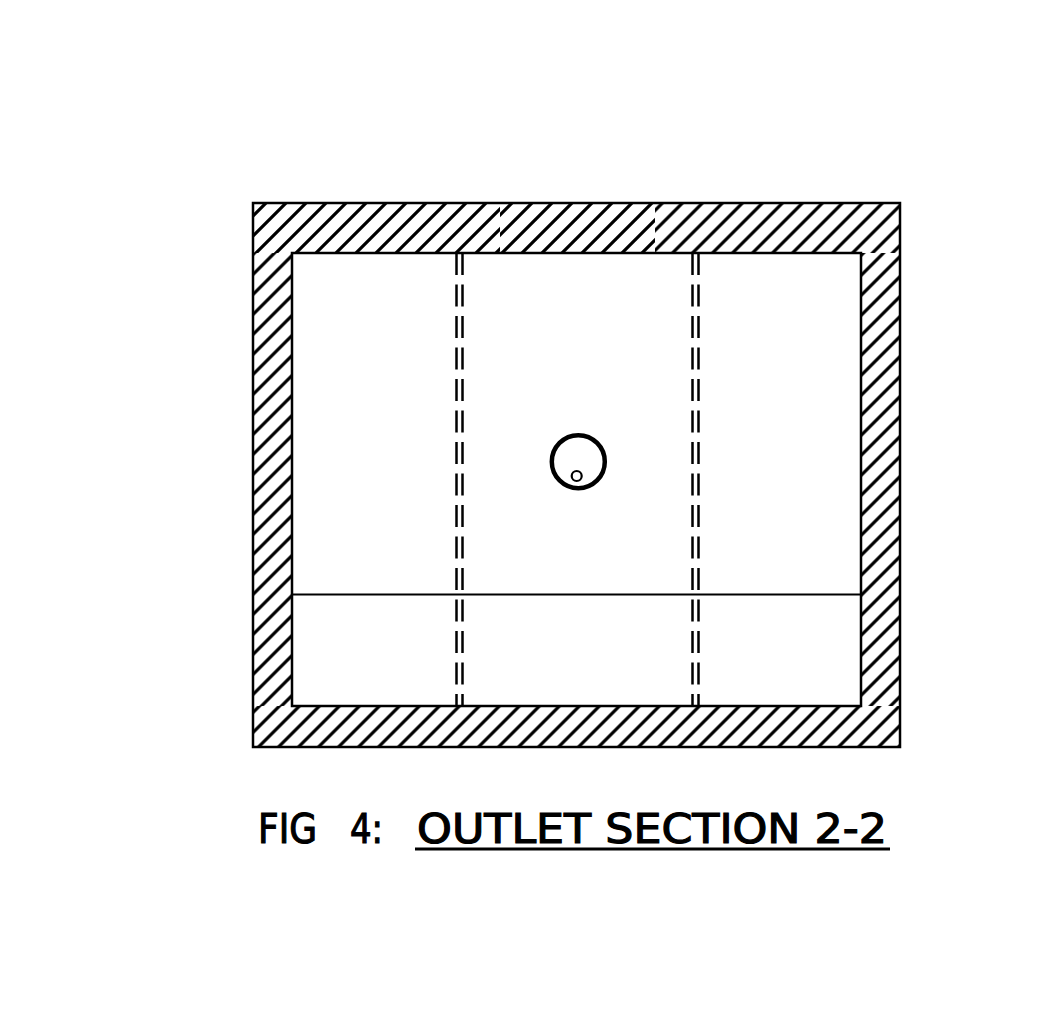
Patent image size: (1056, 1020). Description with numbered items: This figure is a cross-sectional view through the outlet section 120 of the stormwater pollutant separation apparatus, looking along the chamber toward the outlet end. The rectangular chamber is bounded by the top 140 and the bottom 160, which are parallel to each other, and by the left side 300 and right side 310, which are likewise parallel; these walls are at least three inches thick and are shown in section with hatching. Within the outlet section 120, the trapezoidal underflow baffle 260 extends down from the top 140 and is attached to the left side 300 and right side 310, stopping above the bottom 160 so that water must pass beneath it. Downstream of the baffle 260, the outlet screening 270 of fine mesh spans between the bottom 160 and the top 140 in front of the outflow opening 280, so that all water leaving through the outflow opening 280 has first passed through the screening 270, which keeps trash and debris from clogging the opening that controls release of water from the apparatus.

The outlet section 120 is at (915, 132).
The top 140 is at (693, 202).
The bottom 160 is at (751, 748).
The trapezoidal underflow baffle 260 is at (322, 330).
The outlet screening 270 is at (698, 653).
The outflow opening 280 is at (595, 437).
The left side 300 is at (253, 513).
The right side 310 is at (900, 335).